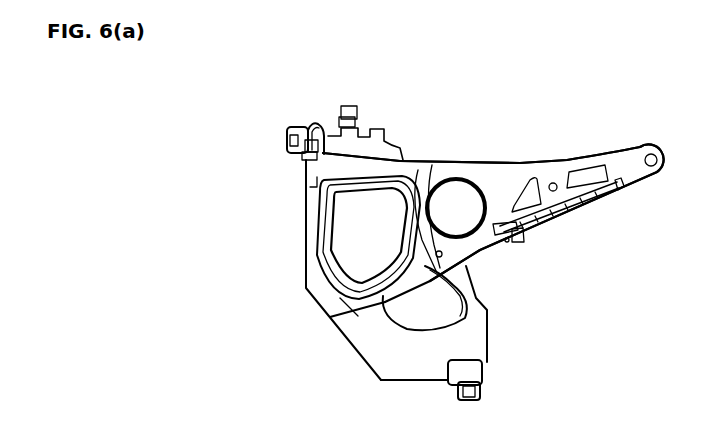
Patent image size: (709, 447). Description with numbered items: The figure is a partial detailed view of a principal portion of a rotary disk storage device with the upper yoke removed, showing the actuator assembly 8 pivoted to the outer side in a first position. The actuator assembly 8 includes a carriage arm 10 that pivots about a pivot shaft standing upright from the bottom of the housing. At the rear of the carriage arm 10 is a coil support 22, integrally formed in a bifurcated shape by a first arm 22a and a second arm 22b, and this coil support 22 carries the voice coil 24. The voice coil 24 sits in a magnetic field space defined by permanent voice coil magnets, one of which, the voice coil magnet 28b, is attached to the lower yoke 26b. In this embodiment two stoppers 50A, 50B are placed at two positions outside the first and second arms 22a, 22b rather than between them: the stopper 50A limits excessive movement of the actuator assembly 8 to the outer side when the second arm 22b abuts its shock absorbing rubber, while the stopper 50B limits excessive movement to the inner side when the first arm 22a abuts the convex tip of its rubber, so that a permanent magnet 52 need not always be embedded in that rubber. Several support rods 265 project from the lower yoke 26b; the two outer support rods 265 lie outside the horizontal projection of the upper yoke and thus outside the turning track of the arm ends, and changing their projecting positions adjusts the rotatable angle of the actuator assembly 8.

The actuator assembly 8 is at (517, 126).
The carriage arm 10 is at (575, 157).
The coil support 22 is at (265, 207).
The first arm 22a is at (330, 317).
The second arm 22b is at (302, 157).
The voice coil 24 is at (325, 256).
The lower yoke 26b is at (395, 370).
The voice coil magnet 28b is at (453, 302).
The stopper 50A is at (287, 131).
The stopper 50B is at (485, 365).
The permanent magnet 52 is at (308, 123).
The support rods 265 is at (347, 108).